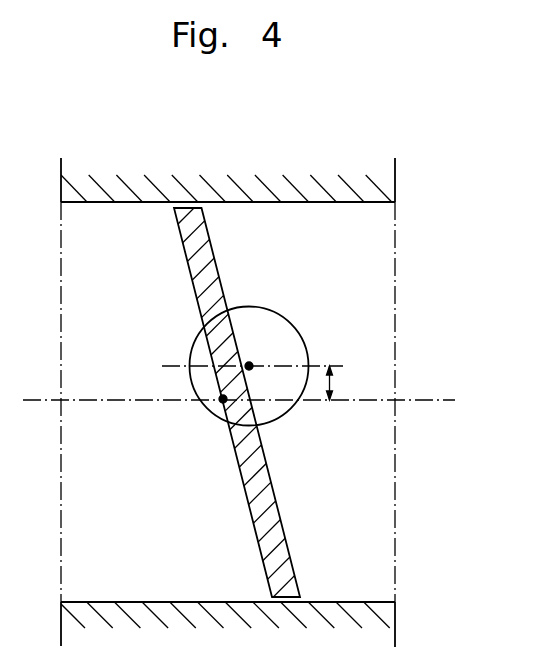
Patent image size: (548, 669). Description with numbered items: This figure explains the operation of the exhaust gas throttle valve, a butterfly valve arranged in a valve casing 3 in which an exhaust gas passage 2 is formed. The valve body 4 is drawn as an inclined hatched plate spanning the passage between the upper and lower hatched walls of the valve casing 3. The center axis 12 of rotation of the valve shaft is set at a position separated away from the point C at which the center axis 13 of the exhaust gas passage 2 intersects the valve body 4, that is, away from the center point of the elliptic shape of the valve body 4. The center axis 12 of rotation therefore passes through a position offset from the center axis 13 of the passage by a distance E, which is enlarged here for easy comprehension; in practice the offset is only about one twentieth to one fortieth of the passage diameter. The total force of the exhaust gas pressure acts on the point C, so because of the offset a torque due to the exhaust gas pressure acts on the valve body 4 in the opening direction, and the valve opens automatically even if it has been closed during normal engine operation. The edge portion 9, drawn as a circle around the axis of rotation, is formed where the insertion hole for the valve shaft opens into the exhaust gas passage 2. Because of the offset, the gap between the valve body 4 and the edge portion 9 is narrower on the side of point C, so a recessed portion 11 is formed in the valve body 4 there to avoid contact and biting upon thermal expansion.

The exhaust gas passage 2 is at (350, 203).
The valve casing 3 is at (220, 185).
The valve body 4 is at (279, 512).
The edge portion 9 is at (295, 329).
The recessed portion 11 is at (236, 418).
The center axis of rotation 12 is at (248, 361).
The center axis of the exhaust gas passage 13 is at (415, 399).
The point C is at (222, 397).
The offset distance E is at (341, 383).